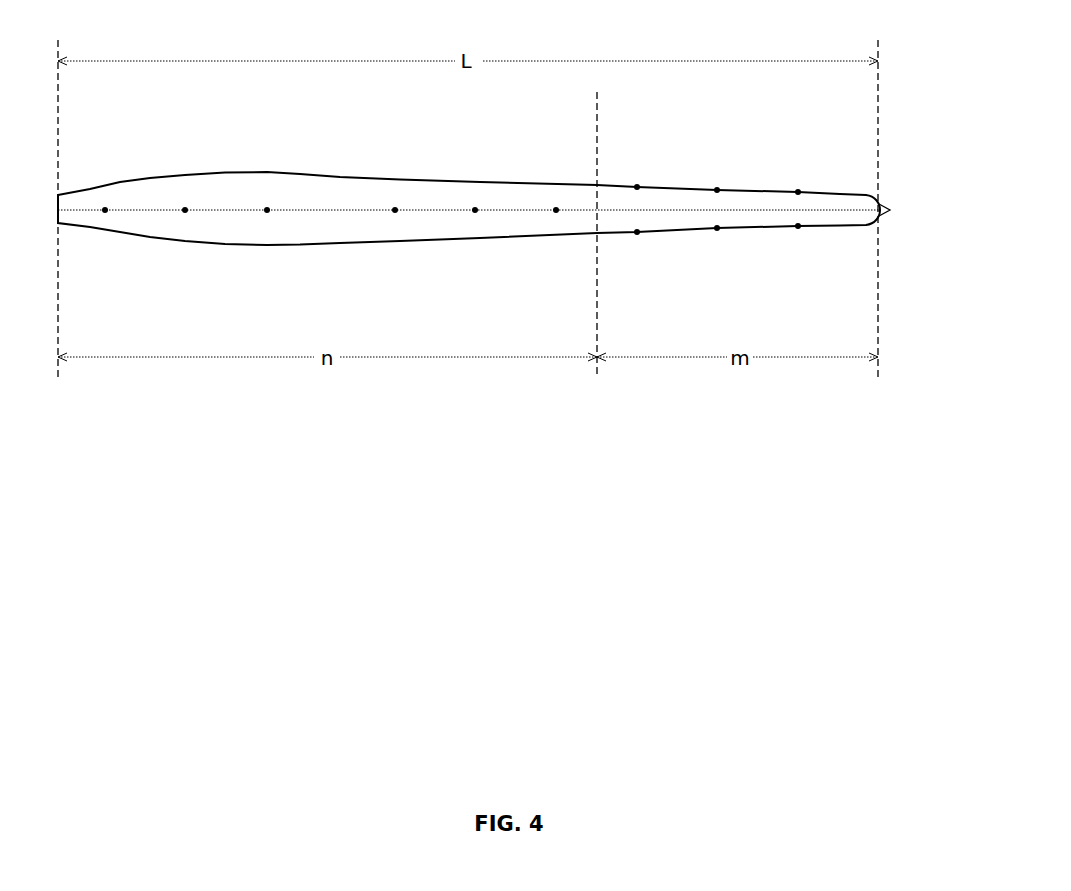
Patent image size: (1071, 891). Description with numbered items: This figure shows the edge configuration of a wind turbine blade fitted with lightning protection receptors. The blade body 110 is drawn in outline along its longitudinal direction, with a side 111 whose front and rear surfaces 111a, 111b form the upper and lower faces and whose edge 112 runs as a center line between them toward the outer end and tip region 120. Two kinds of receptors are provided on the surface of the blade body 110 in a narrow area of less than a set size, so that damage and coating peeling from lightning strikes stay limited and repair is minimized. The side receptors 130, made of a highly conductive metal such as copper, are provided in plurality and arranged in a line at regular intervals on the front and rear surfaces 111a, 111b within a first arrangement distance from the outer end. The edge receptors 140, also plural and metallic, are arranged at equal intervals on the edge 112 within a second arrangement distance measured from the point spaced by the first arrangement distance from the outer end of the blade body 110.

The blade body 110 is at (469, 210).
The side 111 is at (469, 210).
The front surface 111a is at (500, 240).
The rear surface 111b is at (498, 177).
The edge 112 is at (143, 210).
The tip 120 is at (890, 210).
The side receptor 130 is at (798, 192).
The edge receptor 140 is at (267, 210).